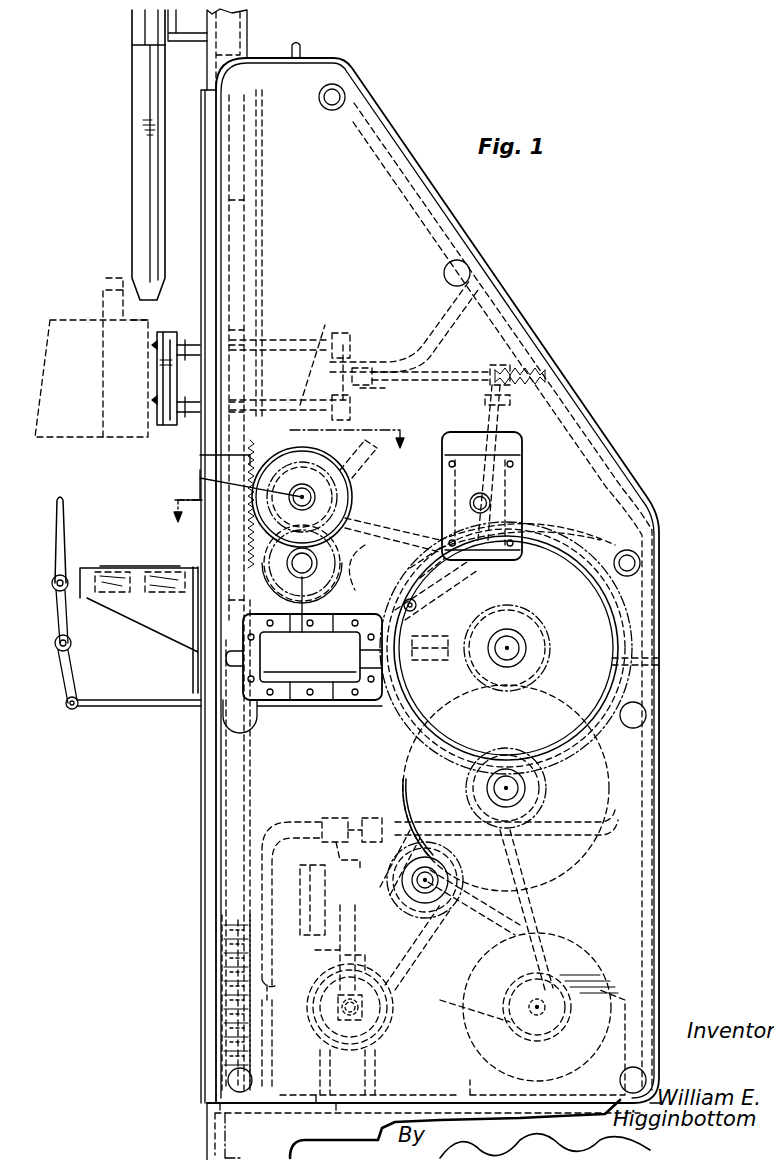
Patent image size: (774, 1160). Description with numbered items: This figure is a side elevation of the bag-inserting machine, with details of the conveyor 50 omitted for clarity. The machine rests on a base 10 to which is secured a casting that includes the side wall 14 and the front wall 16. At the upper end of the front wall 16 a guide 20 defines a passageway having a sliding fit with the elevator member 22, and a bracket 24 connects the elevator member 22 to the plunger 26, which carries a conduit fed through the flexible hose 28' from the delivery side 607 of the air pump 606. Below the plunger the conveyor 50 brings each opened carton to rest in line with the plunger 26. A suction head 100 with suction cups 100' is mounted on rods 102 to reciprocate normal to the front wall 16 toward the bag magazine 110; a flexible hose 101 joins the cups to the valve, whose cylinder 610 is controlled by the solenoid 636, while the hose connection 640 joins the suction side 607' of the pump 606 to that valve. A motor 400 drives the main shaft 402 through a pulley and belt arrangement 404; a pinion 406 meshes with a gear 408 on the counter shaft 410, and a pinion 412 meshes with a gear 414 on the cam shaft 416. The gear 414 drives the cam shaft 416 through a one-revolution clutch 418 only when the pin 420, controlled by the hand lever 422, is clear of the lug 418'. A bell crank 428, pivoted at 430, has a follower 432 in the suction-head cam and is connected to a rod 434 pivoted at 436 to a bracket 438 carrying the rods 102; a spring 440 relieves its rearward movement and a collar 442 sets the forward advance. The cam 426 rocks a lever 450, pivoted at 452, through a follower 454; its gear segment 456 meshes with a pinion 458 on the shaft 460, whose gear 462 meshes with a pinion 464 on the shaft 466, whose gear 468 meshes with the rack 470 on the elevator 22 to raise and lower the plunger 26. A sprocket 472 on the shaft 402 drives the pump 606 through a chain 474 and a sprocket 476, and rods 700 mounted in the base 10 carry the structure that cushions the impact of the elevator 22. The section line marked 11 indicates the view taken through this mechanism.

The base 10 is at (205, 1132).
The side wall 14 is at (410, 188).
The front wall 16 is at (185, 300).
The guide 20 is at (215, 178).
The elevator member 22 is at (240, 40).
The bracket 24 is at (195, 45).
The plunger 26 is at (130, 240).
The flexible hose 28' is at (529, 596).
The conveyor 50 is at (130, 566).
The suction head 100 is at (178, 364).
The suction cups 100' is at (110, 372).
The flexible hose 101 is at (435, 310).
The rods 102 is at (312, 332).
The magazine 110 is at (72, 322).
The section line 11 is at (288, 491).
The motor 400 is at (640, 993).
The main shaft 402 is at (450, 875).
The pulley and belt arrangement 404 is at (545, 915).
The pinion 406 is at (432, 860).
The gear 408 is at (405, 778).
The counter shaft 410 is at (512, 788).
The pinion 412 is at (470, 779).
The gear 414 is at (663, 665).
The cam shaft 416 is at (512, 648).
The one-revolution clutch 418 is at (520, 642).
The lug 418' is at (496, 640).
The pin 420 is at (470, 690).
The hand lever 422 is at (60, 528).
The cam 426 is at (660, 628).
The bell crank 428 is at (512, 430).
The pivot 430 is at (490, 500).
The follower 432 is at (405, 565).
The rod 434 is at (460, 372).
The pivot 436 is at (395, 380).
The bracket 438 is at (365, 400).
The spring 440 is at (553, 360).
The collar 442 is at (485, 400).
The lever 450 is at (420, 540).
The pivot 452 is at (640, 555).
The follower 454 is at (537, 533).
The gear segment 456 is at (305, 485).
The pinion 458 is at (275, 592).
The shaft 460 is at (302, 577).
The gear 462 is at (400, 602).
The pinion 464 is at (240, 480).
The shaft 466 is at (360, 485).
The gear 468 is at (372, 503).
The rack 470 is at (205, 458).
The sprocket 472 is at (500, 893).
The chain 474 is at (470, 975).
The sprocket 476 is at (390, 1010).
The air pump 606 is at (385, 1040).
The delivery side 607 is at (324, 947).
The suction side 607' is at (365, 1068).
The cylinder 610 is at (343, 820).
The solenoid 636 is at (380, 850).
The hose connection 640 is at (290, 832).
The rods 700 is at (212, 972).